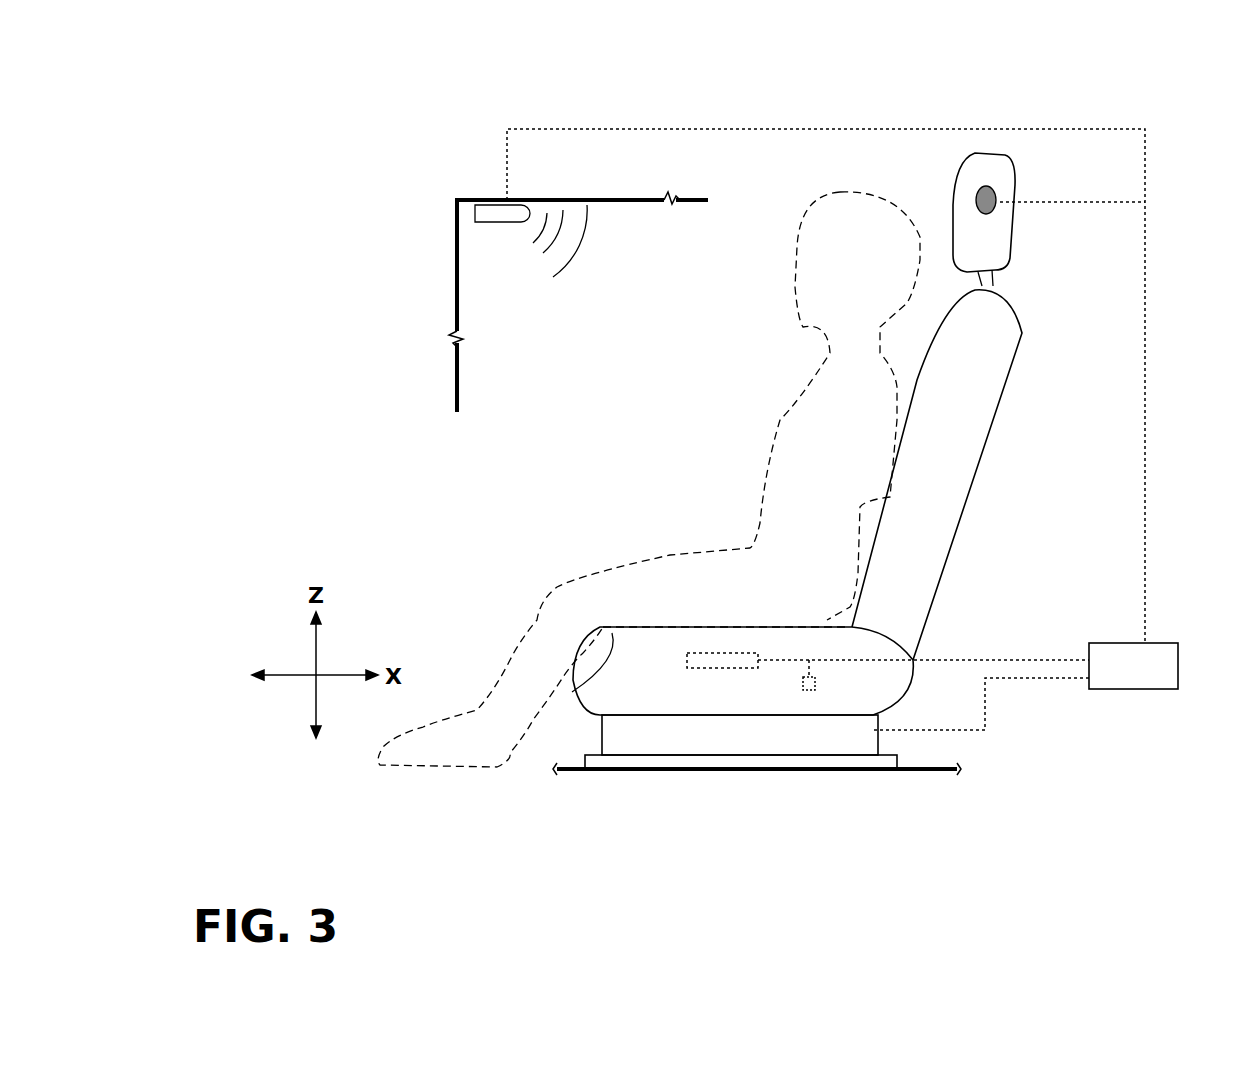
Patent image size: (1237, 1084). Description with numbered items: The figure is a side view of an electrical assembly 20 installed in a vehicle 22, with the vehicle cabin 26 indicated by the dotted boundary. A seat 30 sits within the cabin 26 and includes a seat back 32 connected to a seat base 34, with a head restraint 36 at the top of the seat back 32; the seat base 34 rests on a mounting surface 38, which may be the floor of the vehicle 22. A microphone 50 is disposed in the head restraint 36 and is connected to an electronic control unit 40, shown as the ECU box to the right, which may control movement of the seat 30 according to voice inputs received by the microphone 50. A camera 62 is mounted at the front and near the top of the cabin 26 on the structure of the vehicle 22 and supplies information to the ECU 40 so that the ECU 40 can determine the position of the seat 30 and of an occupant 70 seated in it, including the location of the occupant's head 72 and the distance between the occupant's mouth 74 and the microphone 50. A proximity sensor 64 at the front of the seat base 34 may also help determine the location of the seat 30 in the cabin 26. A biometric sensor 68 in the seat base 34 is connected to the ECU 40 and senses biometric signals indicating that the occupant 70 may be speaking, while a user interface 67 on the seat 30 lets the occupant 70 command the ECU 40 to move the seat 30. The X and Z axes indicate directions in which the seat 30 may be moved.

The electrical assembly 20 is at (1066, 108).
The vehicle 22 is at (456, 298).
The cabin 26 is at (710, 238).
The seat 30 is at (1038, 443).
The seat back 32 is at (950, 527).
The seat base 34 is at (763, 716).
The head restraint 36 is at (1017, 233).
The mounting surface 38 is at (928, 771).
The electronic control unit 40 is at (1130, 690).
The microphone 50 is at (985, 186).
The camera 62 is at (491, 216).
The proximity sensor 64 is at (583, 668).
The user interface 67 is at (808, 691).
The biometric sensor 68 is at (713, 669).
The occupant 70 is at (782, 335).
The head 72 is at (898, 203).
The mouth 74 is at (793, 288).